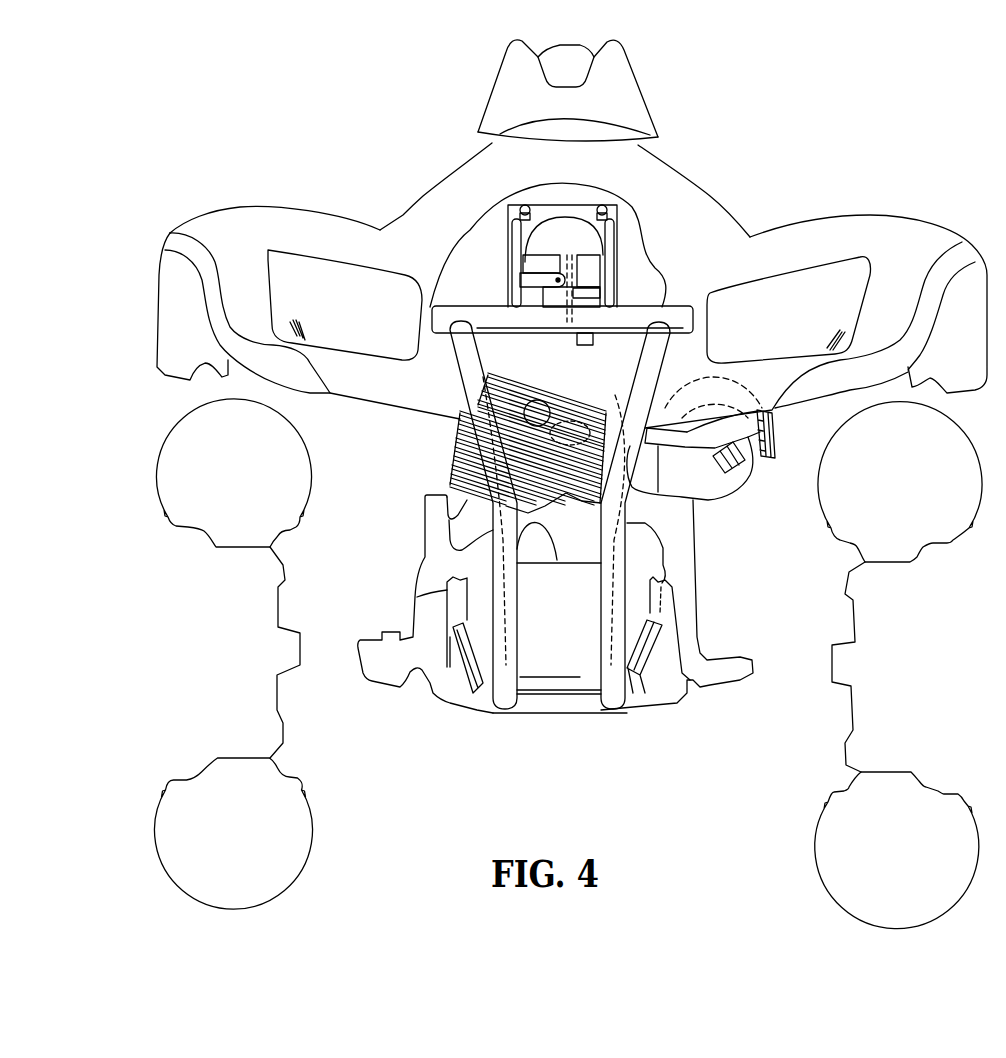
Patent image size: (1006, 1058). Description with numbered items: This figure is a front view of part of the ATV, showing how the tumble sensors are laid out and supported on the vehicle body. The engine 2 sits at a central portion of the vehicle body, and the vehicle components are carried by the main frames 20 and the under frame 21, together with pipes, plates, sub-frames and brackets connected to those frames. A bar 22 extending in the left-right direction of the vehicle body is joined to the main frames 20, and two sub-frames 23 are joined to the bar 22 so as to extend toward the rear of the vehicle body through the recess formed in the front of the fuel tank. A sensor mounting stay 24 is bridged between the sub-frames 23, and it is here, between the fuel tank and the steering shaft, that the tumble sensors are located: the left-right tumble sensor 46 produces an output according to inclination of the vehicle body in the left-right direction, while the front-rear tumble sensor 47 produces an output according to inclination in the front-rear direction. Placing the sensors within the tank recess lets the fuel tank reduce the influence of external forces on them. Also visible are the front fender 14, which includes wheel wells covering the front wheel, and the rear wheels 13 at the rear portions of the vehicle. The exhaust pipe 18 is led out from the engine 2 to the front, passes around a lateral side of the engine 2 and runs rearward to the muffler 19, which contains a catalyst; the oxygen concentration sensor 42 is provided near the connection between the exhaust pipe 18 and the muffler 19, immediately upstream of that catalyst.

The engine 2 is at (450, 437).
The rear wheels 13 is at (237, 525).
The front fender 14 is at (850, 232).
The exhaust pipe 18 is at (700, 497).
The muffler 19 is at (748, 483).
The main frames 20 is at (603, 637).
The under frame 21 is at (457, 693).
The bar 22 is at (645, 318).
The sub-frames 23 is at (517, 240).
The sensor mounting stay 24 is at (597, 268).
The oxygen concentration sensor 42 is at (768, 458).
The left-right tumble sensor 46 is at (540, 297).
The front-rear tumble sensor 47 is at (596, 317).